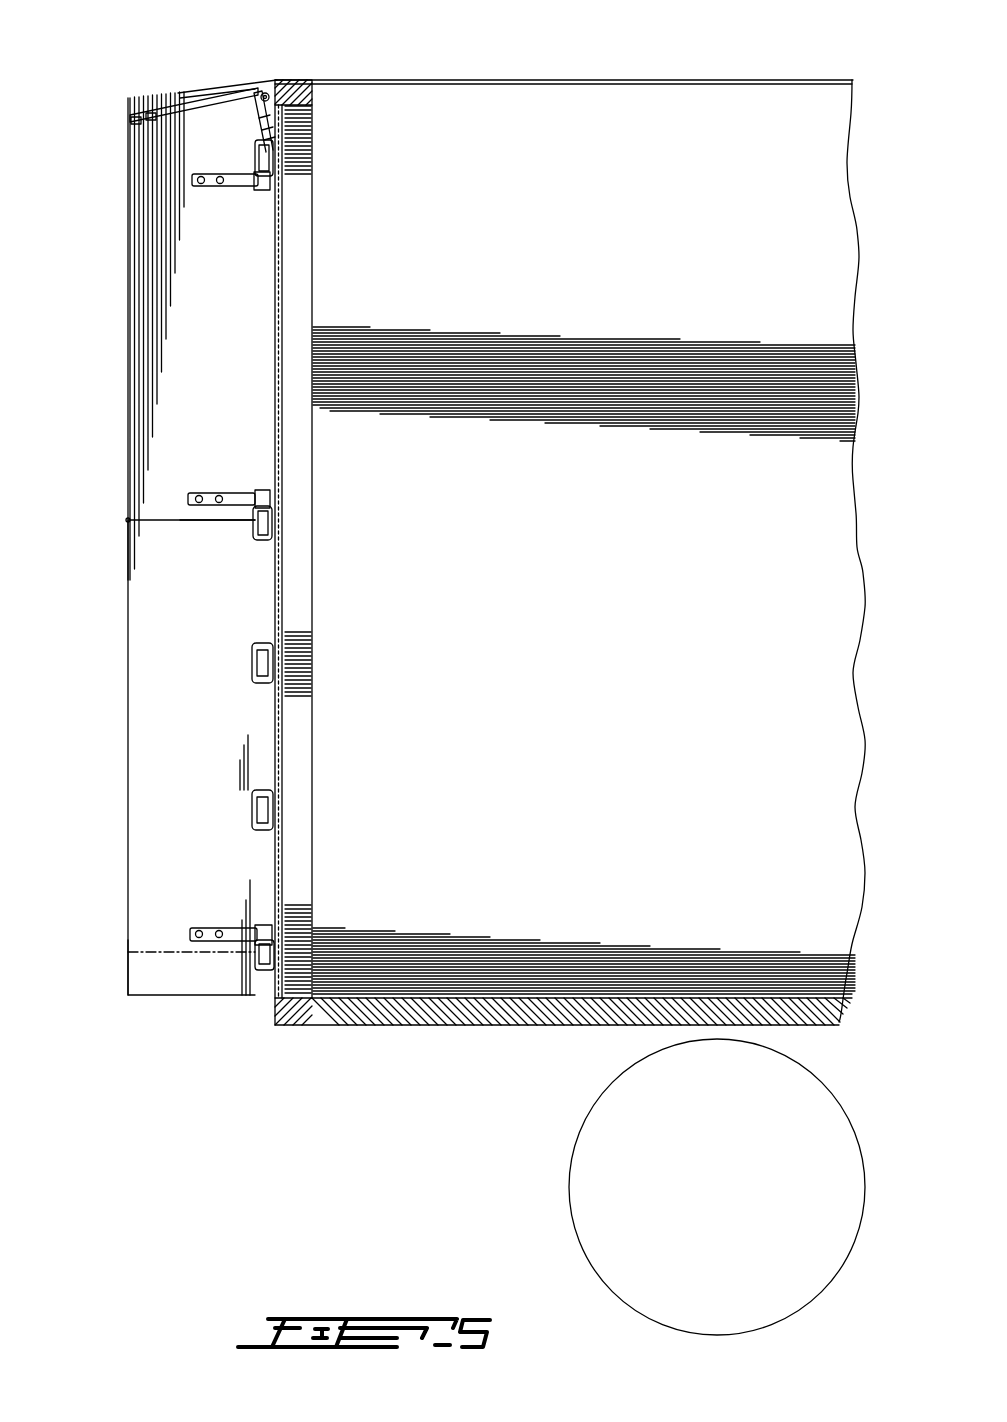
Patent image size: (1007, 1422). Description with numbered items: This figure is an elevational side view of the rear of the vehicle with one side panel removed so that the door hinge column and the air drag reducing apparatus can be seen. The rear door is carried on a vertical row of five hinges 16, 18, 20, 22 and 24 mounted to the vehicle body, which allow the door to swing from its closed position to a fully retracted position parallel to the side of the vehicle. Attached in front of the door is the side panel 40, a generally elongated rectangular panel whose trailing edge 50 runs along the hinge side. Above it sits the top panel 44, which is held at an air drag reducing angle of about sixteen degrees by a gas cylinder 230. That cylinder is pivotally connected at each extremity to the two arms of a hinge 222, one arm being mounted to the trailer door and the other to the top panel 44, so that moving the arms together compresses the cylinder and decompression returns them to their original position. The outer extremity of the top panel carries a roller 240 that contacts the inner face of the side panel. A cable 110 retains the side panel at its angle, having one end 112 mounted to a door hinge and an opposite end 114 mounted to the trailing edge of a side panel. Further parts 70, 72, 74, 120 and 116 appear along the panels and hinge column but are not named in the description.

The hinge 222 is at (285, 118).
The side panel 40 is at (190, 357).
The top panel 44 is at (165, 101).
The roller 240 is at (130, 116).
The gas cylinder 230 is at (264, 120).
The hinge 16 is at (260, 160).
The bracket 70 is at (248, 178).
The bracket 72 is at (257, 496).
The hinge 18 is at (274, 518).
The hinge 20 is at (275, 660).
The hinge 22 is at (275, 805).
The trailing edge 50 is at (128, 800).
The cable 110 is at (180, 520).
The opposite end of cable 114 is at (128, 520).
The bracket 74 is at (240, 930).
The hinge bracket 120 is at (272, 935).
The hinge 24 is at (262, 965).
The one end of cable 112 is at (180, 938).
The lower corner 116 is at (125, 938).